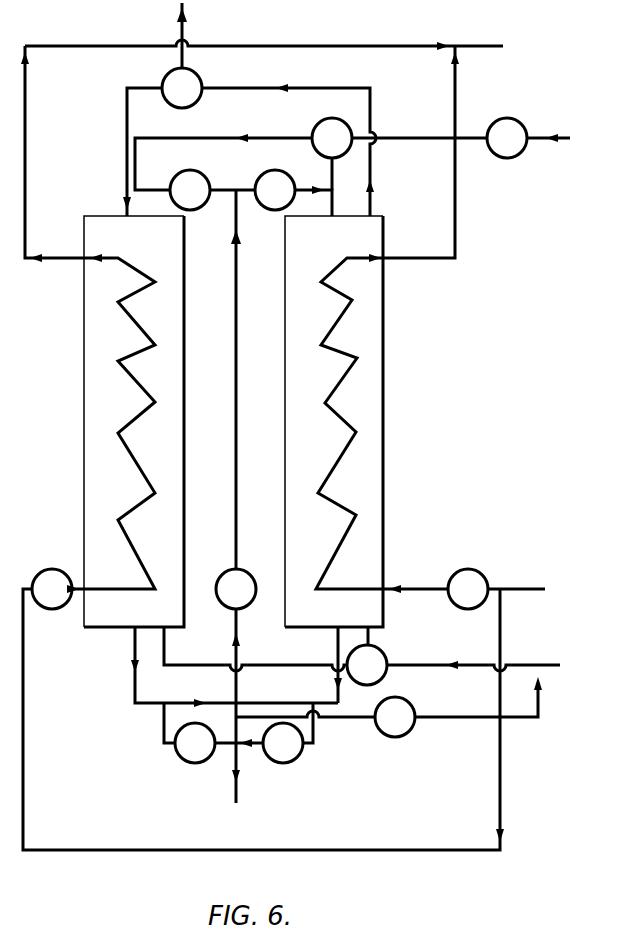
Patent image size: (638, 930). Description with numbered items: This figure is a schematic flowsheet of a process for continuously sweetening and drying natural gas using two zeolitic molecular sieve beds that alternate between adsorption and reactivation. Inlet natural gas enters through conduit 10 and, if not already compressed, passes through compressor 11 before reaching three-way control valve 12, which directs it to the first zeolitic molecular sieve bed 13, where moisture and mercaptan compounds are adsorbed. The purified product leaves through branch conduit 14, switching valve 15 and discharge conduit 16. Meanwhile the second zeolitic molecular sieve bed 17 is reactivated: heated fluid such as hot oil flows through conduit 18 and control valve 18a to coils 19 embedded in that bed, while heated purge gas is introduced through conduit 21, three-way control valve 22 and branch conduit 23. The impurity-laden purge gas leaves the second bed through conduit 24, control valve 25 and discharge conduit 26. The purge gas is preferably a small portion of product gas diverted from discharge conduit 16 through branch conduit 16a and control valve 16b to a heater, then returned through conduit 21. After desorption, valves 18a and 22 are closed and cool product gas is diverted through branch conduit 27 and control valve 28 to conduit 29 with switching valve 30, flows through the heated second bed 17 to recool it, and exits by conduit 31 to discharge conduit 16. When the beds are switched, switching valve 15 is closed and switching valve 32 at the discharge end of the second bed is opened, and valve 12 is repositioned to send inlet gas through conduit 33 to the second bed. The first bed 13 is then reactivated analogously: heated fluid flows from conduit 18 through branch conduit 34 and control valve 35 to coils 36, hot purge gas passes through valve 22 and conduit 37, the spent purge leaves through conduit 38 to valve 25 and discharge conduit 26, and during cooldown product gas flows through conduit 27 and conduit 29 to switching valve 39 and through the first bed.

The conduit 10 is at (540, 130).
The compressor 11 is at (503, 118).
The three-way control valve 12 is at (322, 122).
The first zeolitic molecular sieve bed 13 is at (84, 410).
The branch conduit 14 is at (133, 649).
The switching valve 15 is at (180, 762).
The discharge conduit 16 is at (235, 796).
The branch conduit 16a is at (341, 720).
The control valve 16b is at (406, 735).
The second zeolitic molecular sieve bed 17 is at (384, 405).
The conduit 18 is at (428, 586).
The control valve 18a is at (480, 573).
The coils 19 is at (358, 432).
The conduit 21 is at (430, 662).
The three-way control valve 22 is at (389, 676).
The branch conduit 23 is at (371, 640).
The conduit 24 is at (372, 160).
The control valve 25 is at (202, 78).
The discharge conduit 26 is at (187, 30).
The branch conduit 27 is at (240, 628).
The control valve 28 is at (244, 570).
The conduit 29 is at (238, 186).
The switching valve 30 is at (292, 168).
The conduit 31 is at (336, 642).
The switching valve 32 is at (292, 760).
The conduit 33 is at (334, 182).
The branch conduit 34 is at (66, 851).
The control valve 35 is at (54, 568).
The coils 36 is at (118, 302).
The conduit 37 is at (206, 662).
The conduit 38 is at (126, 128).
The switching valve 39 is at (184, 168).